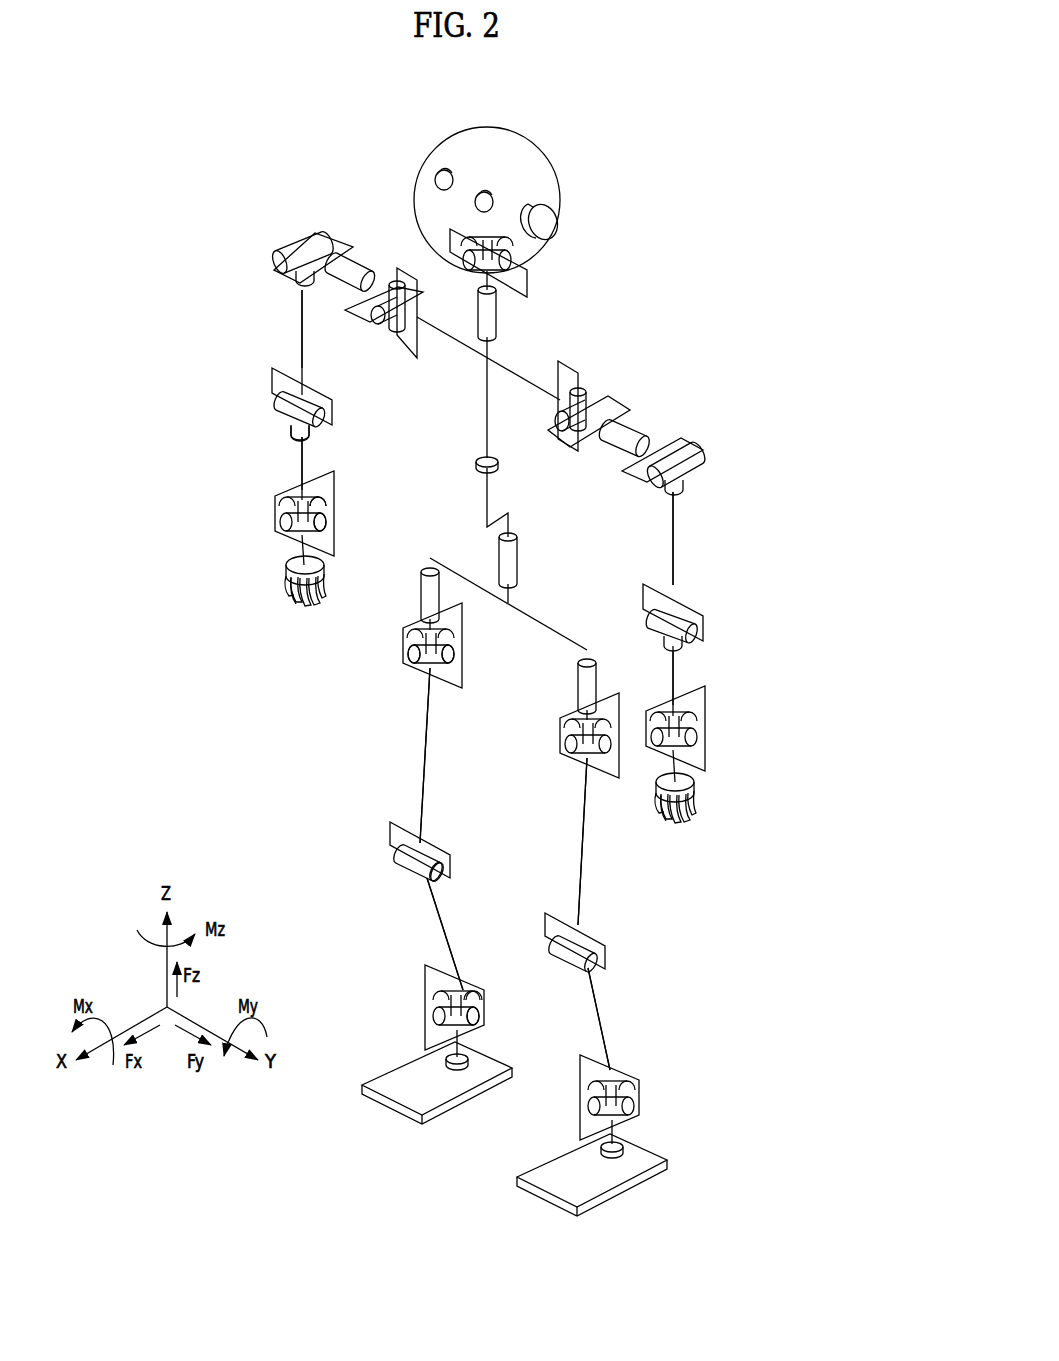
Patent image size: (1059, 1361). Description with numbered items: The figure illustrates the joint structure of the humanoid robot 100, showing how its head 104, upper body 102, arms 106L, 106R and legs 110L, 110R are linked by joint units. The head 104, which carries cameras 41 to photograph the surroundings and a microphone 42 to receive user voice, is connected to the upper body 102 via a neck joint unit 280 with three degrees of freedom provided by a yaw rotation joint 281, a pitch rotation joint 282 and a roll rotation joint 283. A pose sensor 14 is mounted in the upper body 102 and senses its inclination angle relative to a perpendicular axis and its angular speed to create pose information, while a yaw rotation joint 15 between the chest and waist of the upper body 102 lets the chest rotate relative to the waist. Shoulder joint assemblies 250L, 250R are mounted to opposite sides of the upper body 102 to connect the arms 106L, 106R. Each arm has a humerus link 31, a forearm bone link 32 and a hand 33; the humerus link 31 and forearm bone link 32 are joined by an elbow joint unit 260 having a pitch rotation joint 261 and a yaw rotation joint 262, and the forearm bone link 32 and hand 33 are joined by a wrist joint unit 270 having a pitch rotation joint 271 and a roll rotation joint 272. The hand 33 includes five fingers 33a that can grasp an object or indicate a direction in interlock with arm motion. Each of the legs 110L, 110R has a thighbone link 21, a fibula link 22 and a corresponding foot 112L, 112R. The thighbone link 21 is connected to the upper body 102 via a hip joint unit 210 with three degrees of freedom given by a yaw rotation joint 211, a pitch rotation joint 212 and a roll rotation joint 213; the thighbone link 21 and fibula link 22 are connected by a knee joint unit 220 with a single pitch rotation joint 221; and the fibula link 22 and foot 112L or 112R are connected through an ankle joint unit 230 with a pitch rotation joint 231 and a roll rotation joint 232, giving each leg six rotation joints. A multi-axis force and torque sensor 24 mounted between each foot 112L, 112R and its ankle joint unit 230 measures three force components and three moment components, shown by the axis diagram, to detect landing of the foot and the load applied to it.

The humanoid robot 100 is at (763, 142).
The upper body 102 is at (482, 413).
The head 104 is at (552, 150).
The right arm 106R is at (195, 390).
The left arm 106L is at (762, 595).
The right leg 110R is at (328, 798).
The left leg 110L is at (645, 885).
The right foot 112R is at (390, 1105).
The left foot 112L is at (540, 1190).
The pose sensor 14 is at (497, 466).
The rotation joint of a yaw direction 15 is at (517, 565).
The thighbone link 21 is at (425, 770).
The fibula link 22 is at (440, 930).
The multi-axis force and torque sensor 24 is at (466, 1068).
The humerus link 31 is at (298, 323).
The forearm bone link 32 is at (298, 452).
The hand 33 is at (285, 583).
The fingers 33a is at (295, 612).
The cameras 41 is at (478, 203).
The microphone 42 is at (548, 218).
The hip joint unit 210 is at (386, 652).
The rotation joint of a yaw direction 211 is at (422, 590).
The rotation joint of a pitch direction 212 is at (456, 652).
The rotation joint of a roll direction 213 is at (417, 668).
The knee joint unit 220 is at (380, 873).
The rotation joint of a pitch direction 221 is at (437, 845).
The ankle joint unit 230 is at (412, 1003).
The rotation joint of a pitch direction 231 is at (483, 1018).
The rotation joint of a roll direction 232 is at (476, 996).
The right shoulder joint assembly 250R is at (302, 226).
The left shoulder joint assembly 250L is at (639, 385).
The elbow joint unit 260 is at (262, 368).
The rotation joint of a pitch direction 261 is at (310, 398).
The rotation joint of a yaw direction 262 is at (315, 433).
The wrist joint unit 270 is at (268, 530).
The rotation joint of a pitch direction 271 is at (328, 525).
The rotation joint of a roll direction 272 is at (324, 505).
The neck joint unit 280 is at (504, 285).
The rotation joint of a yaw direction 281 is at (495, 318).
The rotation joint of a pitch direction 282 is at (512, 258).
The rotation joint of a roll direction 283 is at (463, 262).